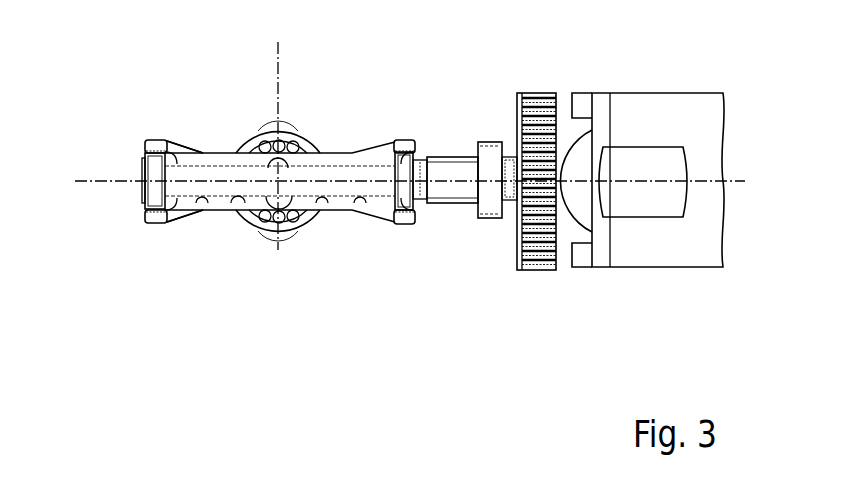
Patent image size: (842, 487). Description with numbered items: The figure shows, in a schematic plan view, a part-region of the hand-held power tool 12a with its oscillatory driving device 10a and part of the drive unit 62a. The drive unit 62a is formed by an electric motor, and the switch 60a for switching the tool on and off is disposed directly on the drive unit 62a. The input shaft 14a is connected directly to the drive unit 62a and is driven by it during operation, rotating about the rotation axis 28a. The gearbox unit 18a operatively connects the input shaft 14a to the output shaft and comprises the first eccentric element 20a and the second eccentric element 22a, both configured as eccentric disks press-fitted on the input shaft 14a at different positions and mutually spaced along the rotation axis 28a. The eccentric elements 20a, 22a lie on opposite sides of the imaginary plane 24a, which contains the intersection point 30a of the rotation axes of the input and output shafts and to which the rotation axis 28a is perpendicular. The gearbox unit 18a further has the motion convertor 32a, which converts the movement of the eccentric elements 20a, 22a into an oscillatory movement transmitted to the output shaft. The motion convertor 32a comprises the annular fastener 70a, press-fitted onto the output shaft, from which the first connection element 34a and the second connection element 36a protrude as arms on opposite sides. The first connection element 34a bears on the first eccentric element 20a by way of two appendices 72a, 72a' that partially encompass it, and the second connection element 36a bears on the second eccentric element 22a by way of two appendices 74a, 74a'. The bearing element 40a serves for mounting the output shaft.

The oscillatory driving device 10a is at (257, 310).
The hand-held power tool 12a is at (315, 342).
The input shaft 14a is at (466, 165).
The gearbox unit 18a is at (440, 100).
The first eccentric element 20a is at (407, 196).
The second eccentric element 22a is at (148, 167).
The imaginary plane 24a is at (268, 103).
The rotation axis of the input shaft 28a is at (101, 178).
The intersection point 30a is at (276, 178).
The motion convertor 32a is at (322, 249).
The first connection element 34a is at (345, 206).
The second connection element 36a is at (223, 208).
The bearing element 40a is at (292, 136).
The switch 60a is at (663, 155).
The drive unit 62a is at (655, 264).
The annular fastener 70a is at (270, 210).
The appendix 72a is at (437, 265).
The appendix 72a' is at (395, 112).
The appendix 74a is at (163, 246).
The appendix 74a' is at (150, 112).